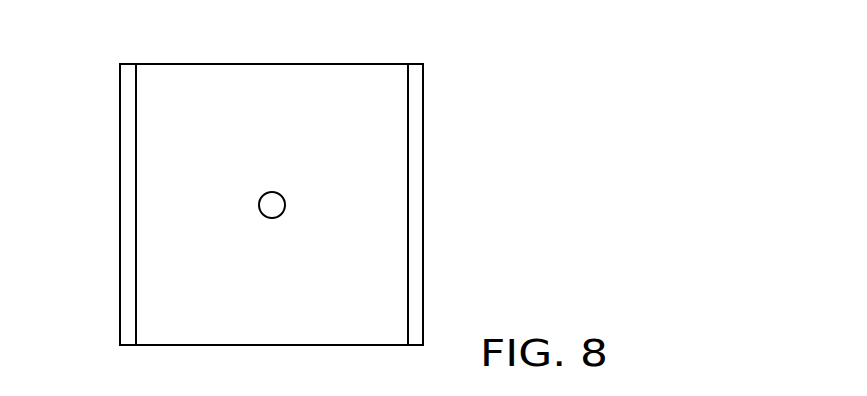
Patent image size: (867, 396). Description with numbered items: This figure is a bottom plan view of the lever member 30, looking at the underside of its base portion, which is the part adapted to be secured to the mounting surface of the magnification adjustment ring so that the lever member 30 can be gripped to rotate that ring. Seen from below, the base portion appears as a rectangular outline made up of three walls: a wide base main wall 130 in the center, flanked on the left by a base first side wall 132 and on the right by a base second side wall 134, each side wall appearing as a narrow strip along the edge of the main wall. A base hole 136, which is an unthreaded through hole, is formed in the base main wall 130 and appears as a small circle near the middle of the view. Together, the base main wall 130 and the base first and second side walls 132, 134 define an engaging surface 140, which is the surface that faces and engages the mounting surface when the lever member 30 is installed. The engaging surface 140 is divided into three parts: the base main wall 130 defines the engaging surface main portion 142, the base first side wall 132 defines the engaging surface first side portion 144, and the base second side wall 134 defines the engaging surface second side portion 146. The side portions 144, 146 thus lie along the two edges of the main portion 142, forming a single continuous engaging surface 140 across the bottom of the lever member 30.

The lever member 30 is at (526, 77).
The base main wall 130 is at (365, 63).
The base first side wall 132 is at (130, 144).
The base second side wall 134 is at (413, 150).
The base hole 136 is at (275, 207).
The engaging surface 140 is at (222, 118).
The engaging surface main portion 142 is at (283, 90).
The engaging surface first side portion 144 is at (137, 205).
The engaging surface second side portion 146 is at (404, 202).